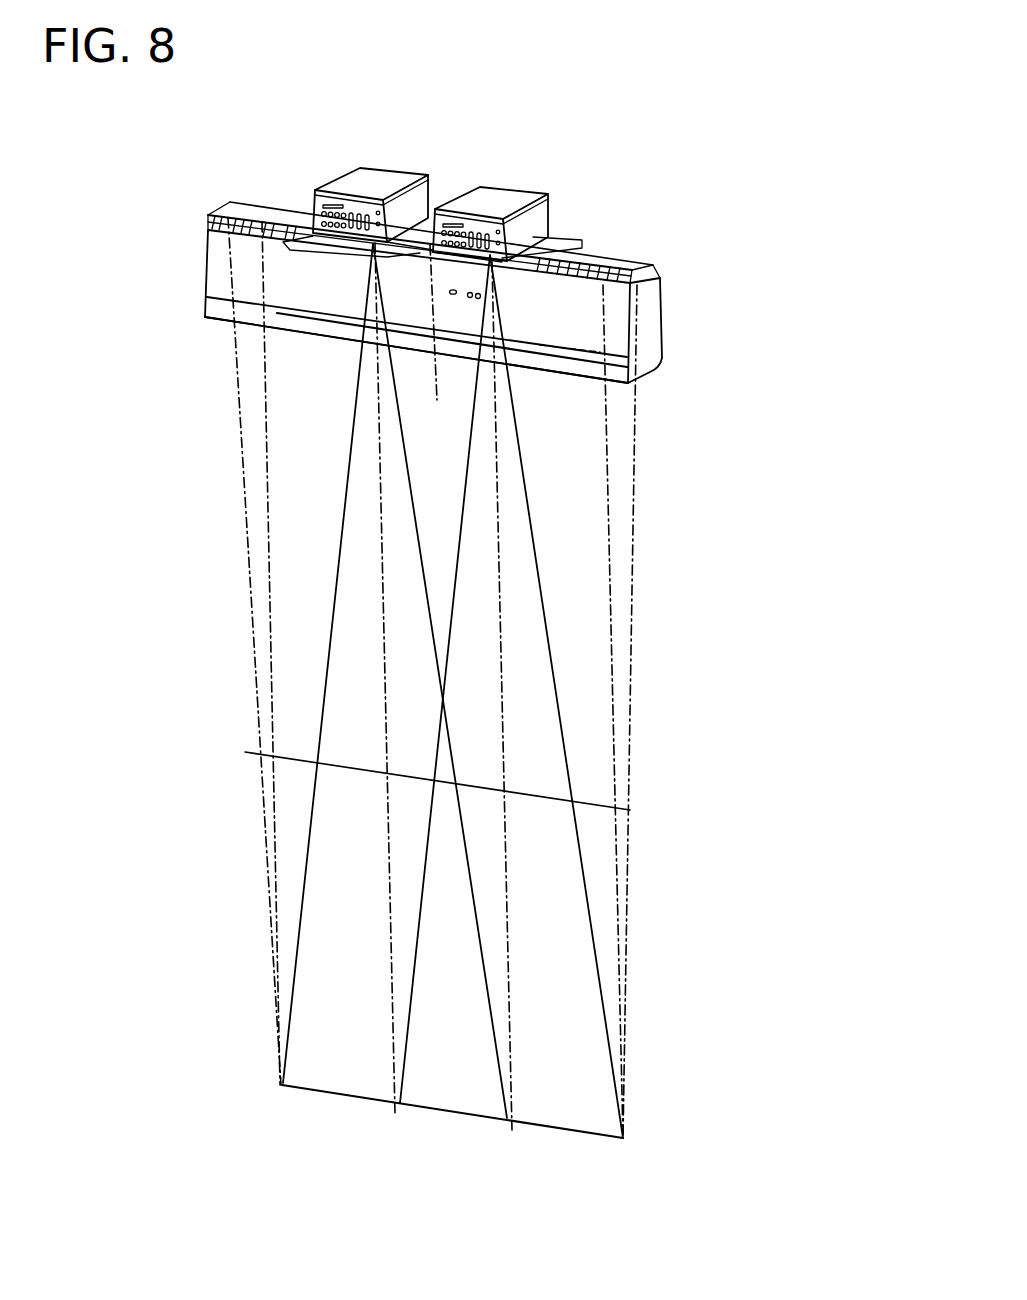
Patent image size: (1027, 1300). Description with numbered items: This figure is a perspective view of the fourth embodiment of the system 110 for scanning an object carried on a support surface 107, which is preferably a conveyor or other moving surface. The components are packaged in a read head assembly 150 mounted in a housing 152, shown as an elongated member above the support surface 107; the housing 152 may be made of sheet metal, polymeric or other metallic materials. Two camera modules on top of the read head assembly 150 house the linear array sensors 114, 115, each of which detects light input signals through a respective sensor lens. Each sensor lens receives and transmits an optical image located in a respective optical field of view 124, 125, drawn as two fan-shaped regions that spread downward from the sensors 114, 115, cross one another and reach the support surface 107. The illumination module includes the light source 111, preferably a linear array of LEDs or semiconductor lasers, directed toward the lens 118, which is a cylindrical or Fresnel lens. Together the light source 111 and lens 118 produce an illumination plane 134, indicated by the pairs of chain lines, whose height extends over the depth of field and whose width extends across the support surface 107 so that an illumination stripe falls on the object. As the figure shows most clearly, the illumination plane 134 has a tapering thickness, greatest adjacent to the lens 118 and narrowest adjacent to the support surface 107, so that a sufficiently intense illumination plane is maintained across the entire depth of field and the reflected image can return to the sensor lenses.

The support surface 107 is at (575, 1132).
The system 110 is at (658, 237).
The light source 111 is at (632, 292).
The linear array sensor 114 is at (381, 175).
The linear array sensor 115 is at (482, 195).
The lens 118 is at (653, 377).
The optical field of view 124 is at (340, 508).
The optical field of view 125 is at (535, 548).
The illumination plane 134 is at (253, 673).
The read head assembly 150 is at (207, 265).
The housing 152 is at (207, 240).